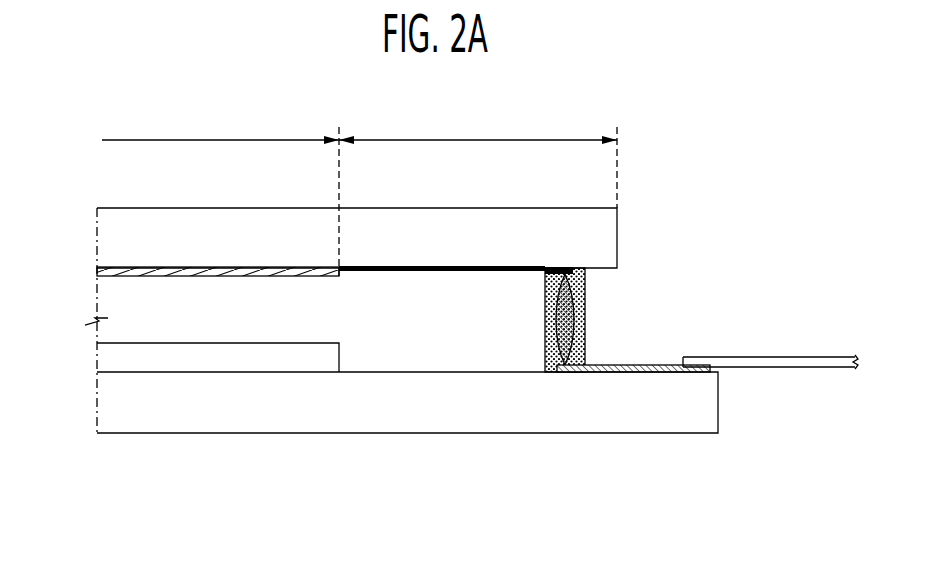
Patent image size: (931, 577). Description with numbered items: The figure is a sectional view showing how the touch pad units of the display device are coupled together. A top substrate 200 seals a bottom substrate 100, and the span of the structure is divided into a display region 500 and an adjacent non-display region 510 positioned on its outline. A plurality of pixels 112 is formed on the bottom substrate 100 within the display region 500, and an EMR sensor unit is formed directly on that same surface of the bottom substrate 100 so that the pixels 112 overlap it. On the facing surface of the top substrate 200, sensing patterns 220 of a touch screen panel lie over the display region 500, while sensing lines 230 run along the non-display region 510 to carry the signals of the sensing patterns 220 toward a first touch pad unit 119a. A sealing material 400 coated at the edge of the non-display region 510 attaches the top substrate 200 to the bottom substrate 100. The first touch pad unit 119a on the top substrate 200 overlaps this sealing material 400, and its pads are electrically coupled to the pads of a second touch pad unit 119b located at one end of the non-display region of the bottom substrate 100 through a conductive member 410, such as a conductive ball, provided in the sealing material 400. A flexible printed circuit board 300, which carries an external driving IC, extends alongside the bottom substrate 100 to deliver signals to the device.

The bottom substrate 100 is at (708, 402).
The pixels 112 is at (100, 361).
The first touch pad unit 119a is at (558, 266).
The second touch pad unit 119b is at (620, 373).
The top substrate 200 is at (610, 238).
The sensing patterns 220 is at (97, 270).
The sensing lines 230 is at (440, 271).
The flexible printed circuit board 300 is at (815, 362).
The sealing material 400 is at (585, 303).
The conductive member 410 is at (577, 337).
The display region 500 is at (220, 193).
The non-display region 510 is at (478, 159).